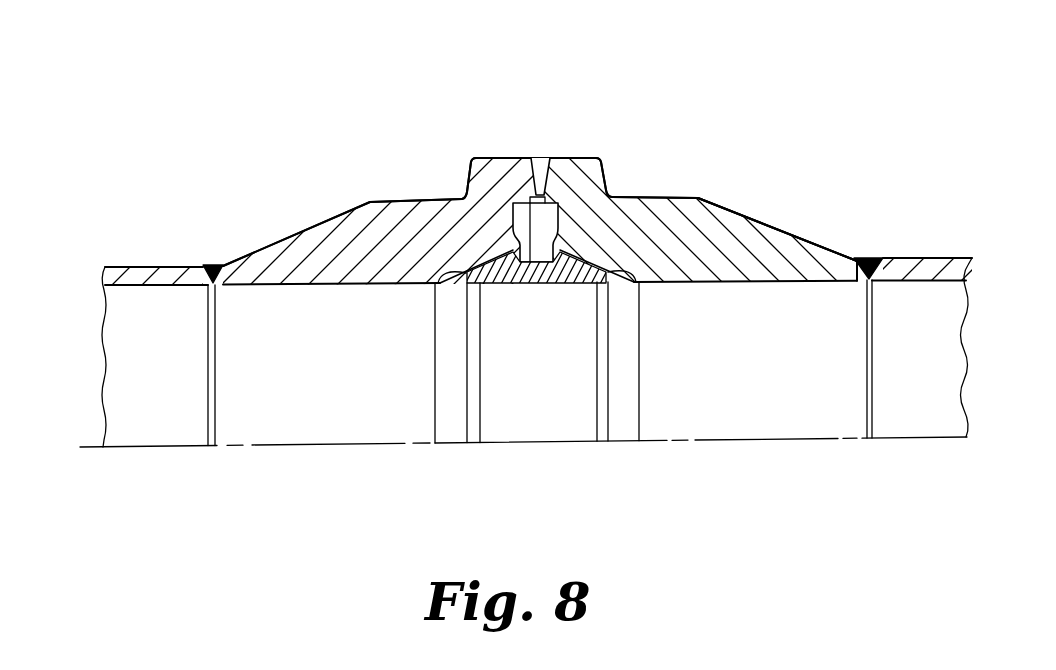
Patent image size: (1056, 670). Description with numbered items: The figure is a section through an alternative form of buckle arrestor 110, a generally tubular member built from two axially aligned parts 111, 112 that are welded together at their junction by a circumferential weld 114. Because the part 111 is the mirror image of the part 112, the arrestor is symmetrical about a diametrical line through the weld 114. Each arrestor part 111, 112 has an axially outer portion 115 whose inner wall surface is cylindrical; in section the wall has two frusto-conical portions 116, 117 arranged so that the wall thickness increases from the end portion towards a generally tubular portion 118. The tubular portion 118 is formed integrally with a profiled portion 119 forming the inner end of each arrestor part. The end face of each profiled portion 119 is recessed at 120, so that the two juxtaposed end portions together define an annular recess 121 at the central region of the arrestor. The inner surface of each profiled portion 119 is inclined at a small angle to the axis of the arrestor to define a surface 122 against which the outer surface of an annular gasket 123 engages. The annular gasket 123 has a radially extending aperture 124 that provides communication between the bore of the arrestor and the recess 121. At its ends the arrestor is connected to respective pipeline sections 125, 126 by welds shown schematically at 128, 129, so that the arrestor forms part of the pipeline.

The buckle arrestor 110 is at (742, 188).
The arrestor part 111 is at (323, 260).
The arrestor part 112 is at (765, 238).
The circumferential weld 114 is at (540, 165).
The axially outer portion 115 is at (267, 287).
The frusto-conical portion 116 is at (253, 267).
The frusto-conical portion 117 is at (347, 250).
The tubular portion 118 is at (422, 247).
The profiled portion 119 is at (495, 180).
The recess 120 is at (488, 280).
The annular recess 121 is at (538, 238).
The inclined surface 122 is at (458, 284).
The annular gasket 123 is at (513, 285).
The radially extending aperture 124 is at (518, 273).
The pipeline section 125 is at (135, 275).
The pipeline section 126 is at (930, 260).
The weld 128 is at (217, 268).
The weld 129 is at (925, 258).